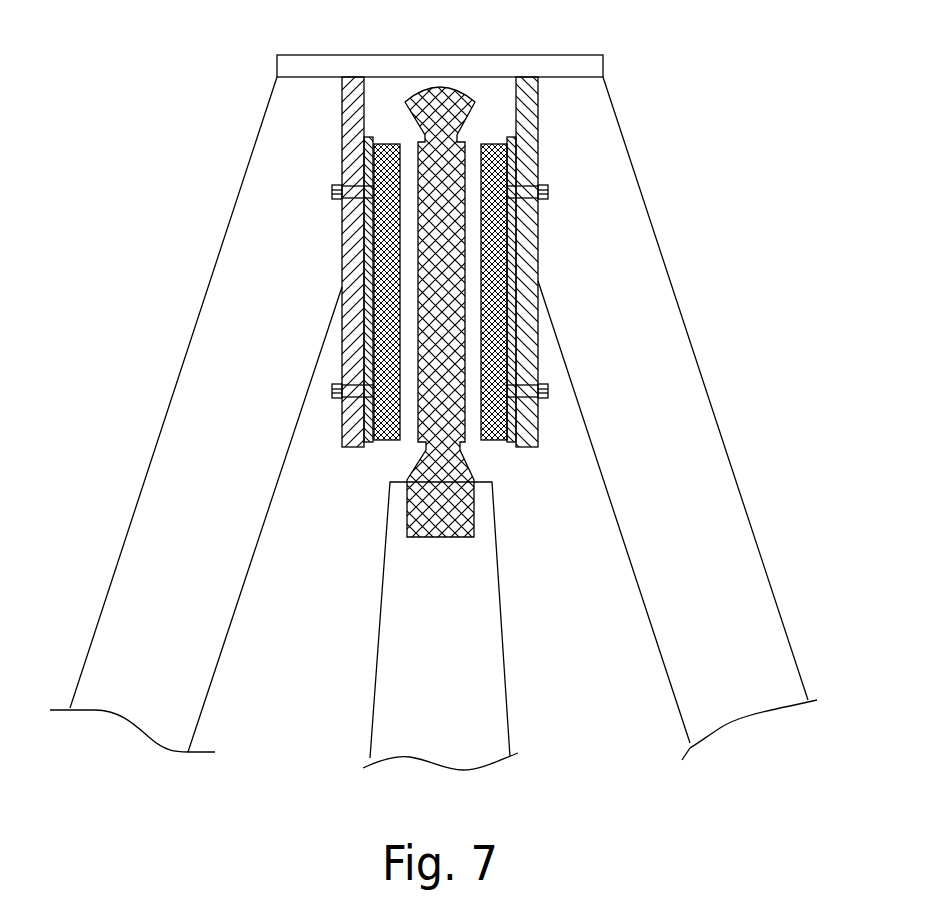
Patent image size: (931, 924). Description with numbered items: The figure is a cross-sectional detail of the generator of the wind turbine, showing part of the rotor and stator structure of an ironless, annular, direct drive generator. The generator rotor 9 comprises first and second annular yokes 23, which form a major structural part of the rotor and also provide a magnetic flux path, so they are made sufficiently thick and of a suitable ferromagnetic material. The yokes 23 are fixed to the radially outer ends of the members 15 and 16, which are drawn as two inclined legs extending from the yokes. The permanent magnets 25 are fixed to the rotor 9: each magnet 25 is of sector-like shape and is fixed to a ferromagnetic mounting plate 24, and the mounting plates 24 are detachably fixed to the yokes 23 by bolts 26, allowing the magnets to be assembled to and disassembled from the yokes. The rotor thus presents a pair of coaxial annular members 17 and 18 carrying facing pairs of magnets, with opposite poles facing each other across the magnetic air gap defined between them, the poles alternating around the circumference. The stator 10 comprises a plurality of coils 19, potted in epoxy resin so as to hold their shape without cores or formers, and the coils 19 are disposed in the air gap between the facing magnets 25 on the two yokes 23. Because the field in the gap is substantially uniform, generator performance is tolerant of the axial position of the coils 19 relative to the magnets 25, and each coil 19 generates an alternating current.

The generator rotor 9 is at (570, 260).
The stator 10 is at (480, 690).
The member 15 is at (143, 555).
The member 16 is at (737, 543).
The coaxial annular member 17 is at (340, 518).
The coaxial annular member 18 is at (541, 518).
The coil 19 is at (438, 92).
The annular yoke 23 is at (348, 125).
The ferromagnetic mounting plate 24 is at (367, 162).
The permanent magnet 25 is at (378, 255).
The bolt 26 is at (332, 392).